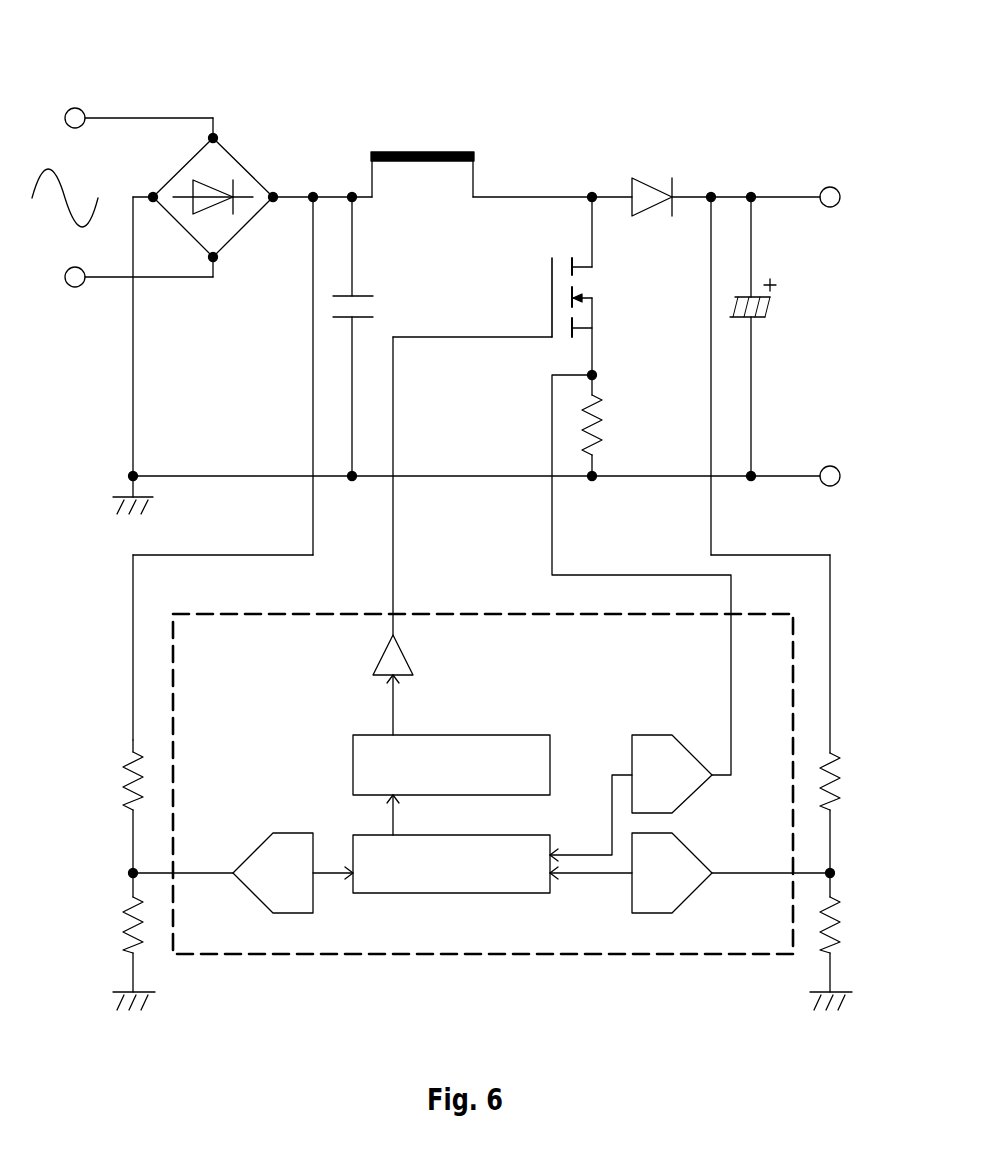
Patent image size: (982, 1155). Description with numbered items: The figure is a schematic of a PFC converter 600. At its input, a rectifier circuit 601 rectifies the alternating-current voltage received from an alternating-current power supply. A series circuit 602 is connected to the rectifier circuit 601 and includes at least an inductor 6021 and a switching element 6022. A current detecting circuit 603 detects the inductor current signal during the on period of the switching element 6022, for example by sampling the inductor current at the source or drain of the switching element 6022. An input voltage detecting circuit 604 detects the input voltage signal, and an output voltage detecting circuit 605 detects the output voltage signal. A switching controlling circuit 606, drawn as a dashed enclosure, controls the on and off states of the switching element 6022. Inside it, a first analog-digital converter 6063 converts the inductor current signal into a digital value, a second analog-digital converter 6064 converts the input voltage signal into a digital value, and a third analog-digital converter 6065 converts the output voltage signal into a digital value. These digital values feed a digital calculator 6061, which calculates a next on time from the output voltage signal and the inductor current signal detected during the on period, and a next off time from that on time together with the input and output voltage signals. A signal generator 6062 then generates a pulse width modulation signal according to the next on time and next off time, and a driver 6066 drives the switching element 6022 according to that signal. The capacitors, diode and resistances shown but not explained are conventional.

The PFC converter 600 is at (272, 24).
The rectifier circuit 601 is at (247, 143).
The series circuit 602 is at (524, 140).
The inductor 6021 is at (408, 147).
The switching element 6022 is at (557, 253).
The current detecting circuit 603 is at (536, 388).
The input voltage detecting circuit 604 is at (85, 860).
The output voltage detecting circuit 605 is at (856, 860).
The switching controlling circuit 606 is at (418, 957).
The digital calculator 6061 is at (498, 895).
The signal generator 6062 is at (470, 733).
The first analog-digital converter 6063 is at (643, 728).
The second analog-digital converter 6064 is at (300, 832).
The third analog-digital converter 6065 is at (655, 915).
The driver 6066 is at (375, 645).